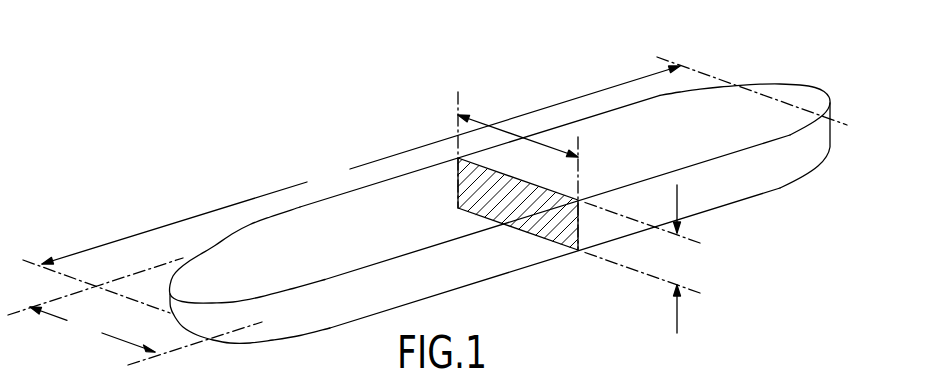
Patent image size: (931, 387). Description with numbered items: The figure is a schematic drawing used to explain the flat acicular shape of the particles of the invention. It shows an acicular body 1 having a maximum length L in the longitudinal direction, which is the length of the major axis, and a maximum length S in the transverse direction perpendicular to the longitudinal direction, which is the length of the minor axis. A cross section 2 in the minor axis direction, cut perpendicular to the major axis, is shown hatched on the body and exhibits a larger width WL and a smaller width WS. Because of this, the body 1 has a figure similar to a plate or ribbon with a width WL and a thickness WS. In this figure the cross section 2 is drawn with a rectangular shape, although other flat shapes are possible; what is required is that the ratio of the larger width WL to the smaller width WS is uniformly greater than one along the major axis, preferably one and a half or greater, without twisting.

The acicular body 1 is at (718, 118).
The cross section 2 is at (485, 196).
The maximum length in the longitudinal direction L is at (435, 185).
The maximum length in the transverse direction S is at (135, 311).
The larger width WL is at (507, 141).
The smaller width WS is at (723, 259).